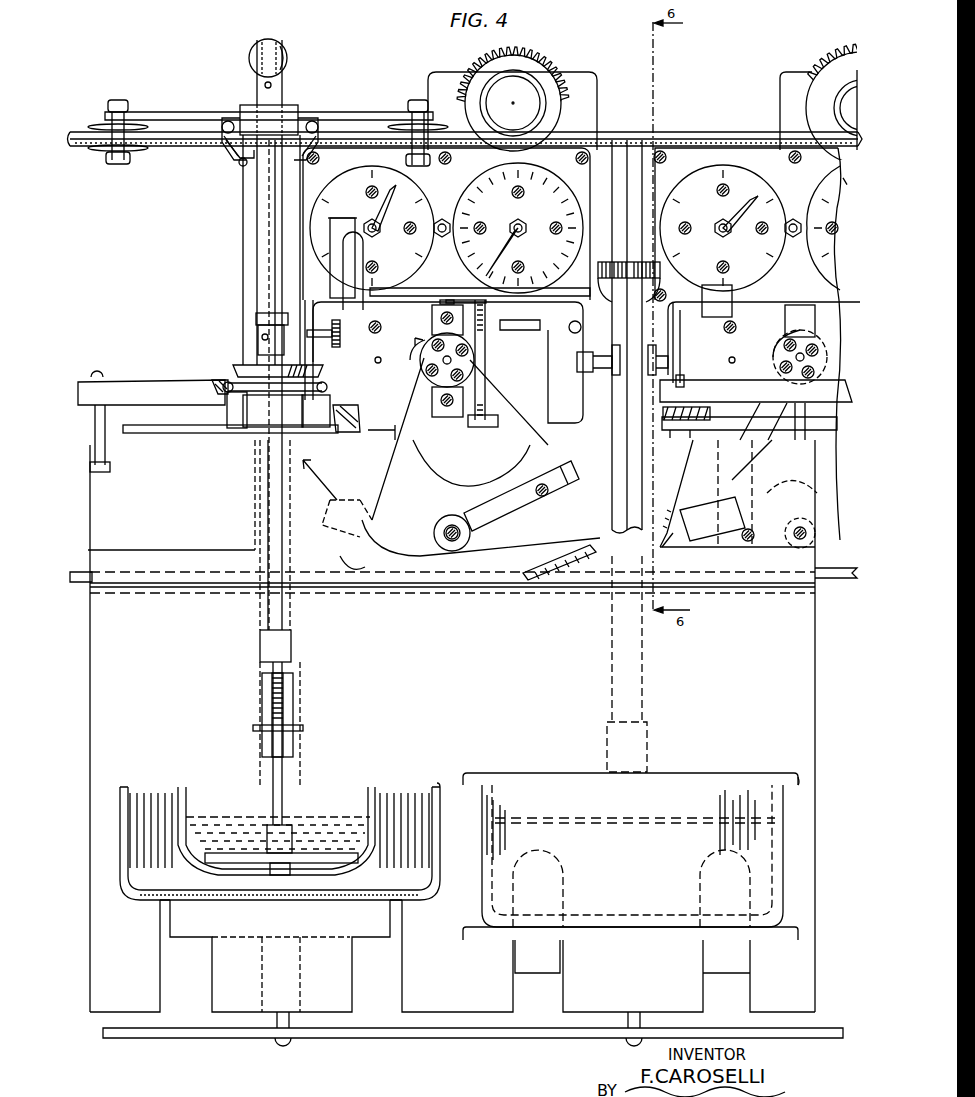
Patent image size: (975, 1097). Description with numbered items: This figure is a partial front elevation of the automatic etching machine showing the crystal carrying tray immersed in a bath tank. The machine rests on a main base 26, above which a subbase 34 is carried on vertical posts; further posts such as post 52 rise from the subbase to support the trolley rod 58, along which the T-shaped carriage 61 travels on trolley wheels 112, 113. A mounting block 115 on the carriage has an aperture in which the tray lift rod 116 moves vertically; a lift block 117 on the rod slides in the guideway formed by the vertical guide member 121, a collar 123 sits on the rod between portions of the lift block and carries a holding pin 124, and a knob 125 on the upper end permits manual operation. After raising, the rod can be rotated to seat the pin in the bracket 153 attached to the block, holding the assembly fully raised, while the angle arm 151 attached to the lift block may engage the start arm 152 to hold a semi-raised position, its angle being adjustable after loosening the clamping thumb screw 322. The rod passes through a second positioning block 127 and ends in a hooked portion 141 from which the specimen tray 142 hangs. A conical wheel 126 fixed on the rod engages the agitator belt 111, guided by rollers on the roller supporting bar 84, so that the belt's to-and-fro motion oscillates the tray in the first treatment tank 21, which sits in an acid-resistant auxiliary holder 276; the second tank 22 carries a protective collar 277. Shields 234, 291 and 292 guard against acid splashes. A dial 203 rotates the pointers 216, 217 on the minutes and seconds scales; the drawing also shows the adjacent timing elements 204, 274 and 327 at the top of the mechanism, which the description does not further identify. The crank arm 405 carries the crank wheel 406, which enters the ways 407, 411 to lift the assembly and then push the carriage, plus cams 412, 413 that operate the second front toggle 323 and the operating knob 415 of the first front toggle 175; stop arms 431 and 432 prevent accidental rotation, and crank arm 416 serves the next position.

The treatment tank 21 is at (390, 790).
The treatment tank 22 is at (540, 786).
The main base 26 is at (360, 1030).
The subbase 34 is at (75, 583).
The post 52 is at (624, 150).
The trolley rod 58 is at (172, 142).
The carriage 61 is at (181, 121).
The roller supporting bar 84 is at (122, 386).
The agitator belt 111 is at (215, 395).
The trolley wheel 112 is at (100, 128).
The trolley wheel 113 is at (400, 128).
The mounting block 115 is at (294, 113).
The tray lift rod 116 is at (268, 181).
The lift block 117 is at (265, 320).
The vertical guide member 121 is at (250, 282).
The collar 123 is at (265, 350).
The holding pin 124 is at (262, 337).
The knob 125 is at (282, 52).
The wheel 126 is at (245, 380).
The positioning block 127 is at (250, 426).
The hooked portion 141 is at (270, 662).
The specimen tray 142 is at (232, 862).
The angle arm 151 is at (342, 248).
The start arm 152 is at (343, 220).
The bracket 153 is at (232, 152).
The first front toggle 175 is at (390, 305).
The dial 203 is at (497, 103).
The gear 204 is at (545, 58).
The pointer 216 is at (378, 230).
The pointer 217 is at (540, 262).
The shield 234 is at (155, 1000).
The pointer 274 is at (660, 270).
The auxiliary holder 276 is at (438, 786).
The protective collar 277 is at (786, 786).
The shield 291 is at (138, 540).
The shield 292 is at (160, 434).
The clamping thumb screw 322 is at (290, 383).
The second front toggle 323 is at (667, 355).
The gear 327 is at (845, 103).
The crank arm 405 is at (420, 385).
The crank wheel 406 is at (452, 550).
The way 407 is at (226, 132).
The way 411 is at (320, 150).
The cam 412 is at (350, 526).
The cam 413 is at (500, 508).
The operating knob 415 is at (600, 372).
The crank arm 416 is at (770, 428).
The stop arm 431 is at (402, 432).
The stop arm 432 is at (716, 445).